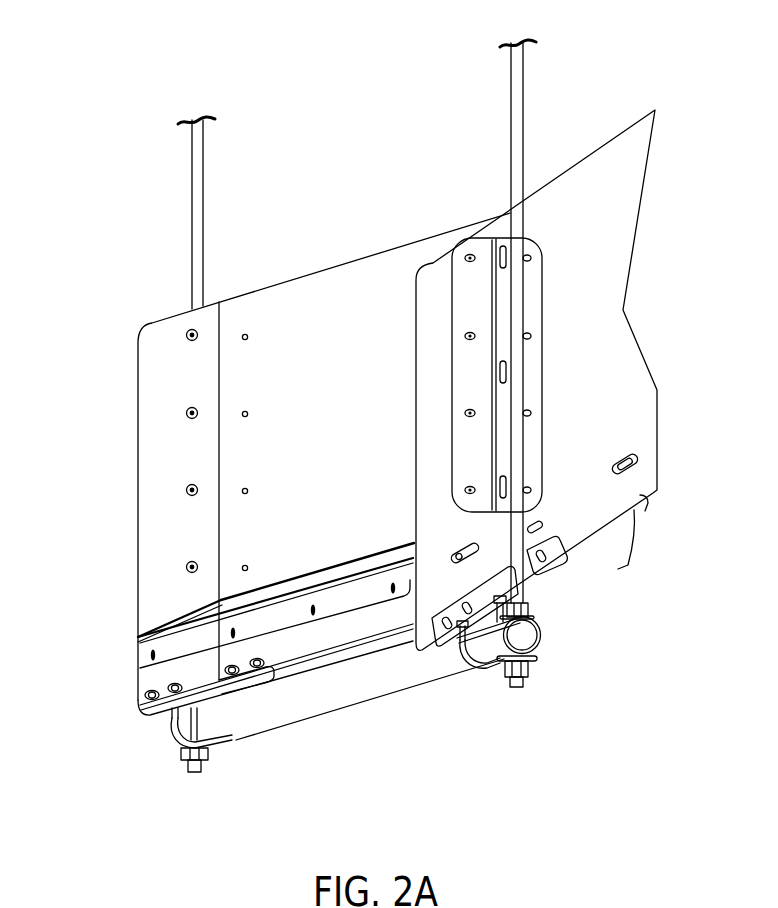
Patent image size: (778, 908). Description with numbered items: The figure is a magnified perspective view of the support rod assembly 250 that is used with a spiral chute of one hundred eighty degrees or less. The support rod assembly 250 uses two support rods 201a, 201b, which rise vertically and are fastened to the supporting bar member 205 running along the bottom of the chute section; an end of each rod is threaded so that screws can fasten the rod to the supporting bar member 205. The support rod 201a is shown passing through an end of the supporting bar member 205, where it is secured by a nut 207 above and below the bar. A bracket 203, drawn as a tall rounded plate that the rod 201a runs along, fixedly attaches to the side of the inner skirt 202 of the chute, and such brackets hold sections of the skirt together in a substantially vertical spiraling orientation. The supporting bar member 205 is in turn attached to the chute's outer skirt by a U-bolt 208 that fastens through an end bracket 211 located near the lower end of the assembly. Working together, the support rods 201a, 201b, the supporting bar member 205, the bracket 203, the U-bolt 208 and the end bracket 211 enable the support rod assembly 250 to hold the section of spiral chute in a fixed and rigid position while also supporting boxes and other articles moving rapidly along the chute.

The support rod 201a is at (515, 94).
The support rod 201b is at (192, 207).
The inner skirt 202 is at (607, 367).
The bracket 203 is at (532, 290).
The supporting bar member 205 is at (295, 703).
The nut 207 is at (530, 672).
The U-bolt 208 is at (482, 664).
The end bracket 211 is at (536, 573).
The support rod assembly 250 is at (735, 784).